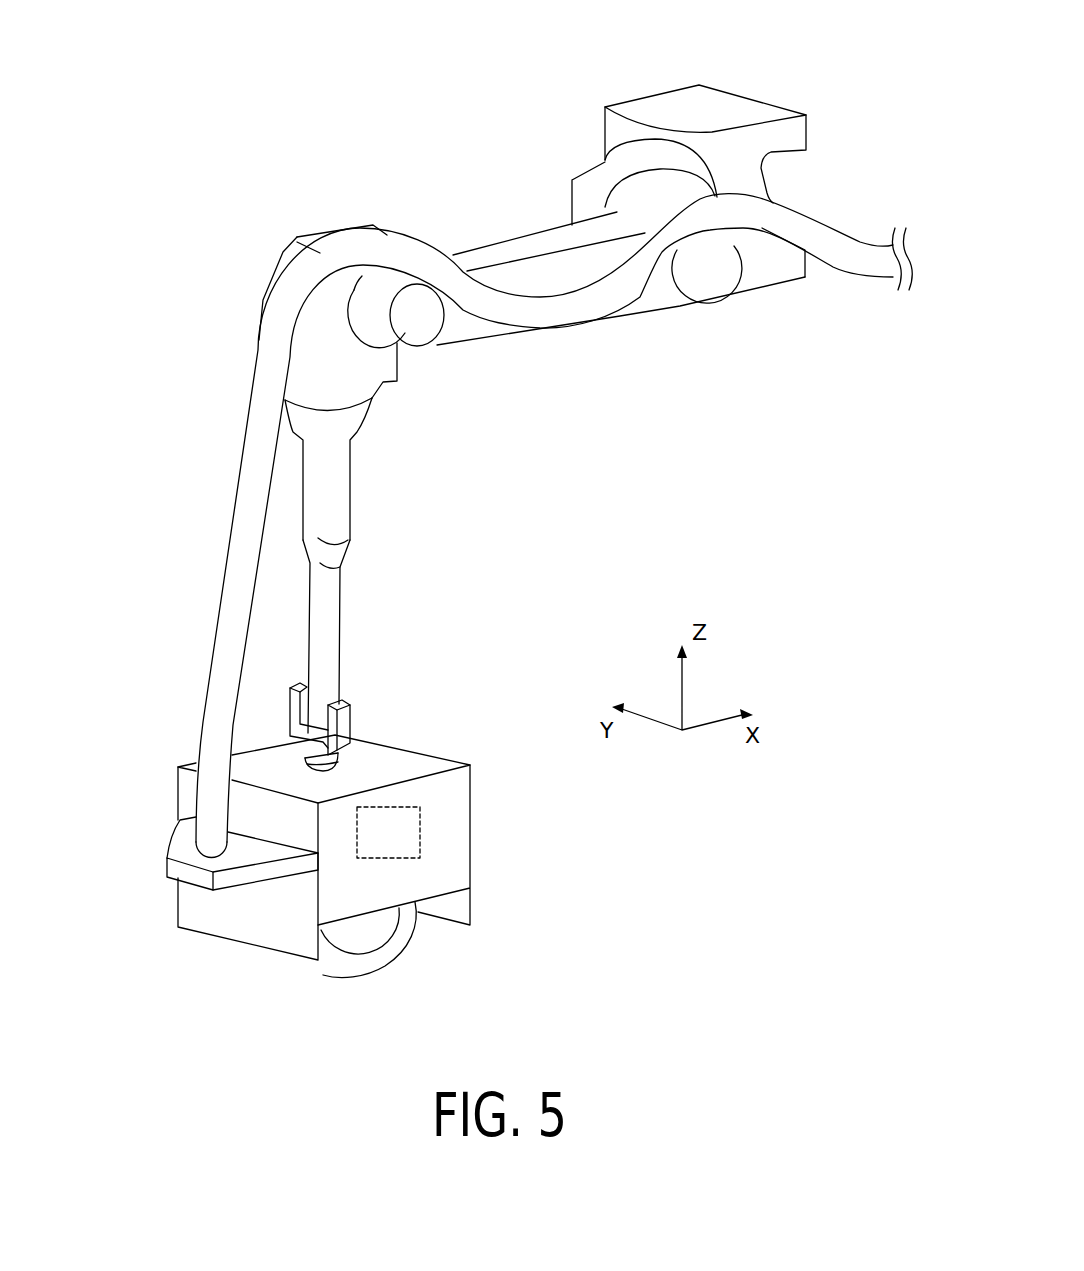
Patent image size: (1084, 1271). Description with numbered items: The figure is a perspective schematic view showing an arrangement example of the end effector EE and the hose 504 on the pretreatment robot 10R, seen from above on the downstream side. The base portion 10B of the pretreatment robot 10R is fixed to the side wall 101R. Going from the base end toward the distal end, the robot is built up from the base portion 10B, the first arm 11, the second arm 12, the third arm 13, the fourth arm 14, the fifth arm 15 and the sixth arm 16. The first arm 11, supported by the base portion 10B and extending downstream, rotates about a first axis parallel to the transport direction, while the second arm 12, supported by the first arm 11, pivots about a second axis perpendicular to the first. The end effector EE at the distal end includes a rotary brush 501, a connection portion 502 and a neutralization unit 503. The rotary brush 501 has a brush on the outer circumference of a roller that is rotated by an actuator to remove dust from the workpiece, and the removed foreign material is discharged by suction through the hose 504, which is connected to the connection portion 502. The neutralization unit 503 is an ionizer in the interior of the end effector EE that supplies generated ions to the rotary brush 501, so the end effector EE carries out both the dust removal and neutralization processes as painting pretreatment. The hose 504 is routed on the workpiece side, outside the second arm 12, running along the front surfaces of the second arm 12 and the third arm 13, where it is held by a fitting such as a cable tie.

The pretreatment robot 10R is at (358, 156).
The base portion 10B is at (768, 138).
The side wall 101R is at (550, 82).
The first arm 11 is at (596, 190).
The second arm 12 is at (655, 295).
The third arm 13 is at (285, 262).
The fourth arm 14 is at (327, 583).
The fifth arm 15 is at (353, 712).
The sixth arm 16 is at (347, 757).
The hose 504 is at (242, 545).
The end effector EE is at (440, 860).
The neutralization unit 503 is at (407, 805).
The connection portion 502 is at (183, 850).
The rotary brush 501 is at (375, 957).